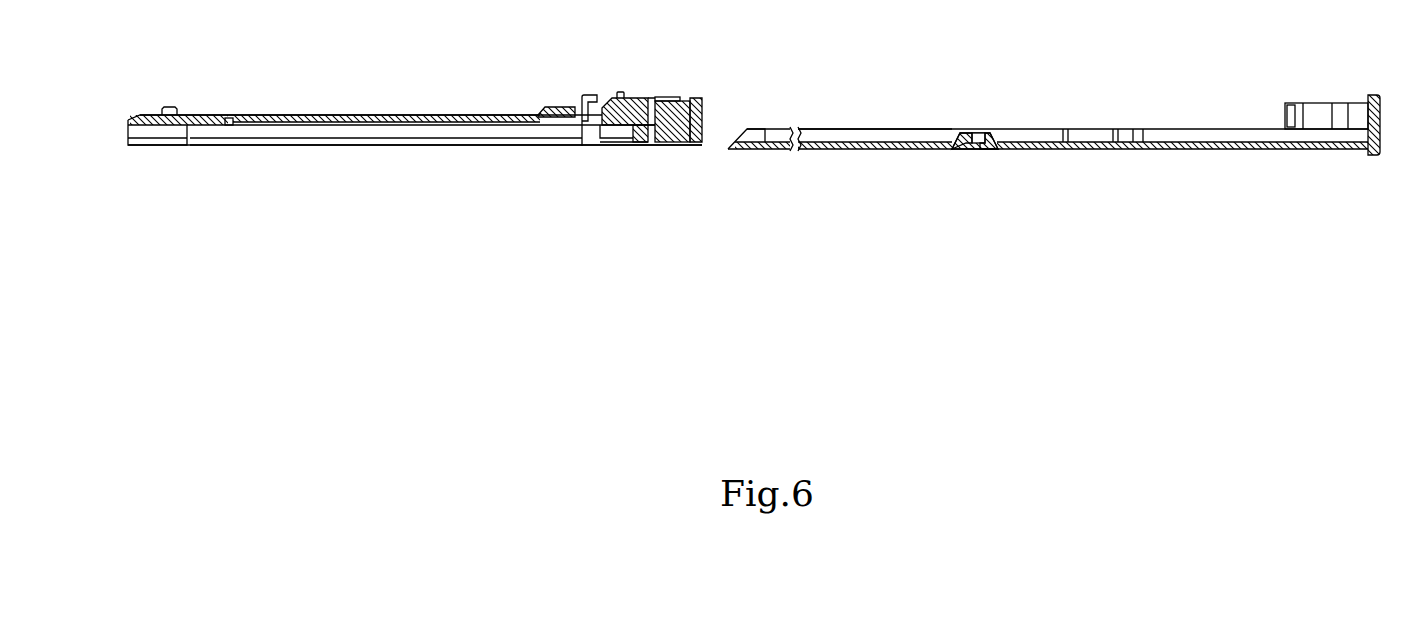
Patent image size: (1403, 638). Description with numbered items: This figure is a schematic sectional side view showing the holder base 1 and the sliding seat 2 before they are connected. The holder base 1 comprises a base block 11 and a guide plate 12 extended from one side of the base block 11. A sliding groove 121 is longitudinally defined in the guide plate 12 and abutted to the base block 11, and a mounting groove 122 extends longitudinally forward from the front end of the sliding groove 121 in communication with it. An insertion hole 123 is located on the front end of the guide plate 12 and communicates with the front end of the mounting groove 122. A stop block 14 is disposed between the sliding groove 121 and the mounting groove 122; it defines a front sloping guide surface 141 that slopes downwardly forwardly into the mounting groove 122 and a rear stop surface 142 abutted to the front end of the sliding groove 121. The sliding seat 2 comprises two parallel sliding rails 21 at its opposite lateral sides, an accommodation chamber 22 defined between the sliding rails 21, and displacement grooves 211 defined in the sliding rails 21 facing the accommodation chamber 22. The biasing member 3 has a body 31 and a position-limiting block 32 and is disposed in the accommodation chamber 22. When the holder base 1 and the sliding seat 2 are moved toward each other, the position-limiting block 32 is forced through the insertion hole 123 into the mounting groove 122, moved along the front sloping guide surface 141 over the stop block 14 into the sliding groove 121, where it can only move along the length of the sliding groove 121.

The holder base 1 is at (1210, 118).
The base block 11 is at (1372, 95).
The guide plate 12 is at (1210, 148).
The sliding groove 121 is at (1207, 146).
The mounting groove 122 is at (863, 142).
The insertion hole 123 is at (758, 140).
The stop block 14 is at (962, 146).
The front sloping guide surface 141 is at (956, 141).
The rear stop surface 142 is at (992, 139).
The sliding seat 2 is at (468, 114).
The sliding rails 21 is at (392, 115).
The accommodation chamber 22 is at (453, 136).
The displacement grooves 211 is at (168, 133).
The biasing member 3 is at (630, 91).
The body 31 is at (613, 115).
The position-limiting block 32 is at (647, 133).